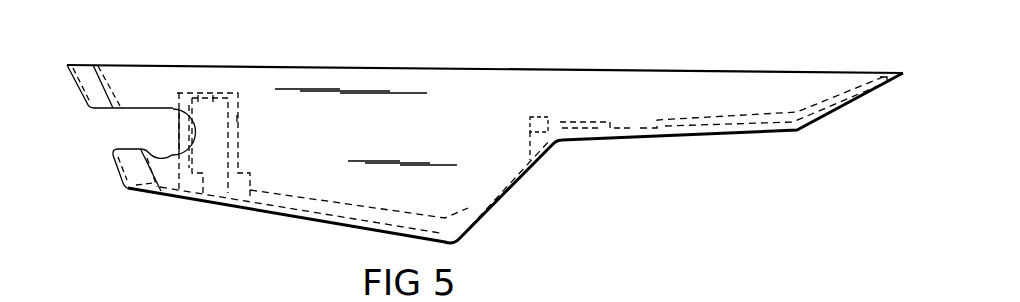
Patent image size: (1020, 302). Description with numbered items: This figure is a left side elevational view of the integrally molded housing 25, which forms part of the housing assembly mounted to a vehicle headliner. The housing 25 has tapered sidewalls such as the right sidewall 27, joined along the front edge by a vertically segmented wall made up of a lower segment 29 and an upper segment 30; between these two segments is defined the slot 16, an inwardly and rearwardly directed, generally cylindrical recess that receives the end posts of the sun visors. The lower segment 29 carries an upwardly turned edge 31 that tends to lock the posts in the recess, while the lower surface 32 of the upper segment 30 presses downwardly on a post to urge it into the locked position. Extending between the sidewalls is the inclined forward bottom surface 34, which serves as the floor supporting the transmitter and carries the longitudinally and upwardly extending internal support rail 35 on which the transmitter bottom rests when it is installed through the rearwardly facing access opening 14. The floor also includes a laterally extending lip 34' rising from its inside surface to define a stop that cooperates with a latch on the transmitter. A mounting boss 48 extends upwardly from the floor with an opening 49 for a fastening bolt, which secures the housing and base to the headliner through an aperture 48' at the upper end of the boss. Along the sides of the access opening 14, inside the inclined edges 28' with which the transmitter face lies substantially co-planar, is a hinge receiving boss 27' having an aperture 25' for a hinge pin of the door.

The access opening 14 is at (545, 176).
The slot 16 is at (171, 127).
The housing 25 is at (485, 44).
The aperture 25' is at (511, 136).
The right sidewall 27 is at (366, 127).
The hinge receiving boss 27' is at (713, 102).
The inclined edges 28' is at (534, 214).
The lower segment 29 is at (130, 173).
The upper segment 30 is at (81, 92).
The upwardly turned edge 31 is at (140, 149).
The lower surface 32 is at (110, 109).
The forward bottom surface 34 is at (515, 165).
The lip 34' is at (460, 203).
The internal support rail 35 is at (300, 200).
The mounting boss 48 is at (241, 145).
The aperture 48' is at (213, 115).
The opening 49 is at (213, 197).